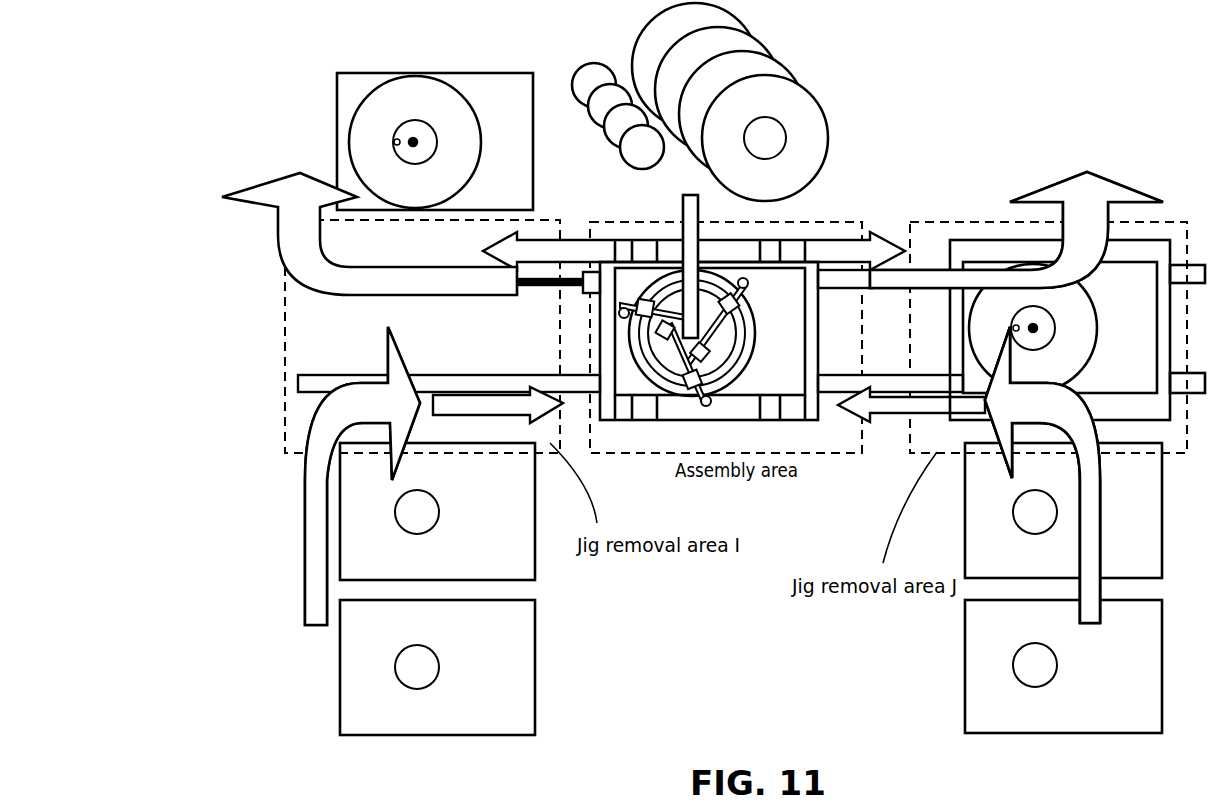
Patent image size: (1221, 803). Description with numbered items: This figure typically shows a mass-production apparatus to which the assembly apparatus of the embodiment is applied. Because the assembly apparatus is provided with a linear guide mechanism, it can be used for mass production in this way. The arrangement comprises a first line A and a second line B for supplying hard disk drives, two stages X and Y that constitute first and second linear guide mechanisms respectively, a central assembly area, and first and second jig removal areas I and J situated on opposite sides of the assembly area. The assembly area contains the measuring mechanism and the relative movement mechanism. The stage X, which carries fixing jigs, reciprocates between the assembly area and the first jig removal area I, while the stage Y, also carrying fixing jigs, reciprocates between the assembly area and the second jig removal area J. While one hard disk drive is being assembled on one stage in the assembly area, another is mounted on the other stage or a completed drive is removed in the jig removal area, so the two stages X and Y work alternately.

The first line A is at (328, 680).
The second line B is at (955, 667).
The stage X is at (908, 416).
The stage Y is at (969, 229).